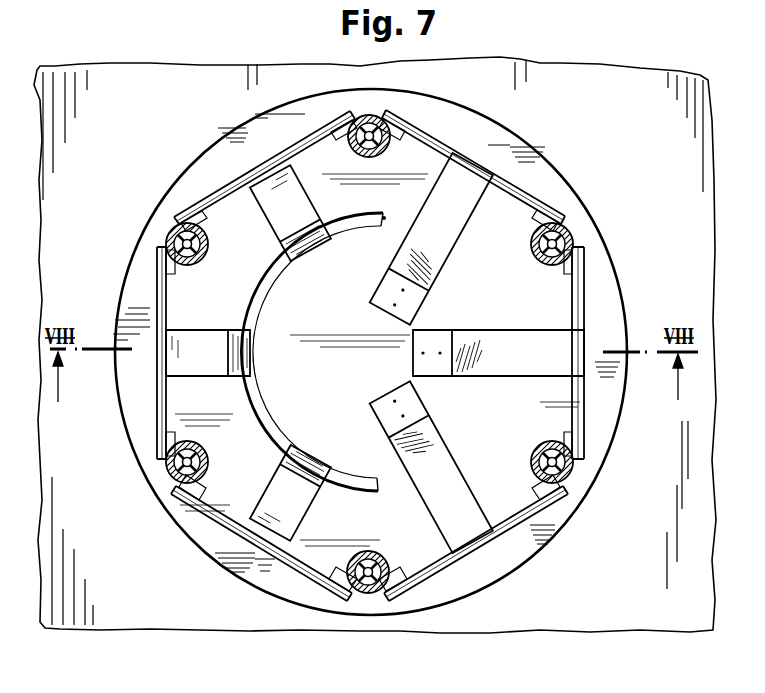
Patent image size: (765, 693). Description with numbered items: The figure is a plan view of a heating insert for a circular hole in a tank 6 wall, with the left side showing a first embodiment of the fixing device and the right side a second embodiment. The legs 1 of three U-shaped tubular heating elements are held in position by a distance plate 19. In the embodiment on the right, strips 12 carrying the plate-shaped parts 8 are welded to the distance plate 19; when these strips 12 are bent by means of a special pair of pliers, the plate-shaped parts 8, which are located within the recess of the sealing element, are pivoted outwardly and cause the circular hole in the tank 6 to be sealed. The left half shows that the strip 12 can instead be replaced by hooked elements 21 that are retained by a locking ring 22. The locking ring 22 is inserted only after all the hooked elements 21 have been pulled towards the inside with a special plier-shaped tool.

The legs 1 is at (167, 473).
The tank 6 is at (688, 617).
The plate-shaped parts 8 is at (220, 522).
The strip 12 is at (450, 480).
The distance plate 19 is at (507, 270).
The hooked elements 21 is at (290, 524).
The locking ring 22 is at (266, 440).